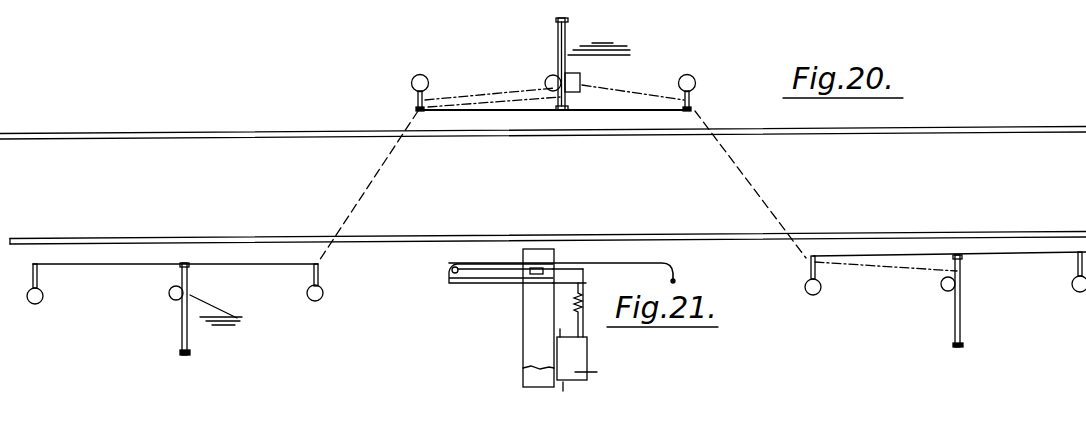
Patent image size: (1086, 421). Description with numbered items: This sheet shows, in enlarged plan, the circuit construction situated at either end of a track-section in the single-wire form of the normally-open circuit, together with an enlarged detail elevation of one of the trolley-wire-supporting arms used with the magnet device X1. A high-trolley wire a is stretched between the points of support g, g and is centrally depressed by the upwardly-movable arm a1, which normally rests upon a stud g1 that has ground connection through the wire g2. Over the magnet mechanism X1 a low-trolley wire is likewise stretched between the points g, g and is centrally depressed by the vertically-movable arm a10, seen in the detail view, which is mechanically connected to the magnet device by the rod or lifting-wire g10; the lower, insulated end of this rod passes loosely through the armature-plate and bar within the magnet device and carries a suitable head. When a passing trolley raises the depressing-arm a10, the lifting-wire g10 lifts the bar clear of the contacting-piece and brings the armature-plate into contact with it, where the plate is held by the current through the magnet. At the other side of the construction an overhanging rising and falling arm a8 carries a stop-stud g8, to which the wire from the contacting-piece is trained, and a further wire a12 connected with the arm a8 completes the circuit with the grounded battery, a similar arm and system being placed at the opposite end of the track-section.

In FIG. 20, the magnet device X1 is at (593, 61).
In FIG. 21, the points of support g is at (178, 283).
In FIG. 21, the high-trolley wire a is at (175, 277).
In FIG. 21, the upwardly-movable arm a1 is at (192, 309).
In FIG. 21, the stud g1 is at (190, 295).
In FIG. 21, the ground wire g2 is at (192, 301).
In FIG. 21, the rod or lifting-wire g10 is at (581, 284).
In FIG. 21, the vertically-movable arm a10 is at (664, 263).
In FIG. 21, the overhanging rising and falling arm a8 is at (962, 268).
In FIG. 21, the stop-stud g8 is at (962, 283).
In FIG. 21, the wire a12 is at (949, 270).